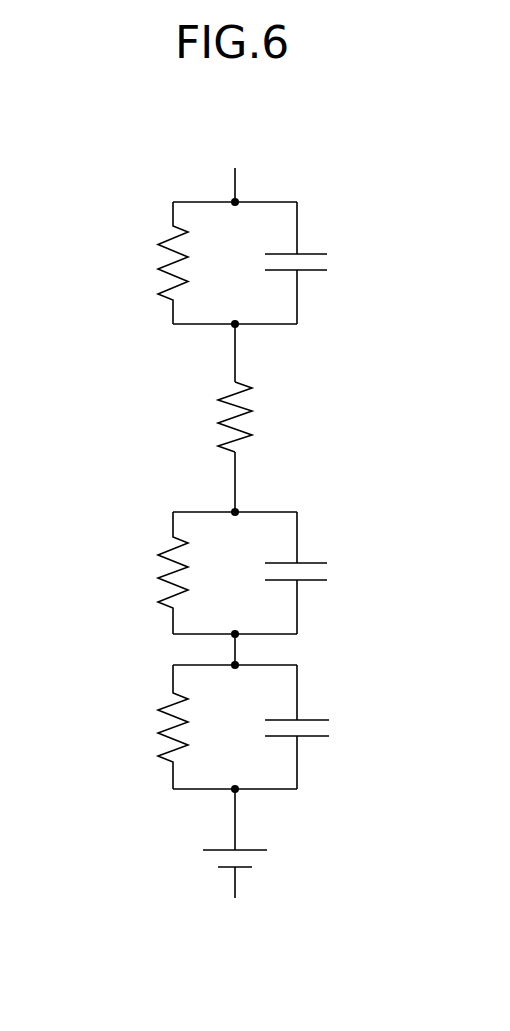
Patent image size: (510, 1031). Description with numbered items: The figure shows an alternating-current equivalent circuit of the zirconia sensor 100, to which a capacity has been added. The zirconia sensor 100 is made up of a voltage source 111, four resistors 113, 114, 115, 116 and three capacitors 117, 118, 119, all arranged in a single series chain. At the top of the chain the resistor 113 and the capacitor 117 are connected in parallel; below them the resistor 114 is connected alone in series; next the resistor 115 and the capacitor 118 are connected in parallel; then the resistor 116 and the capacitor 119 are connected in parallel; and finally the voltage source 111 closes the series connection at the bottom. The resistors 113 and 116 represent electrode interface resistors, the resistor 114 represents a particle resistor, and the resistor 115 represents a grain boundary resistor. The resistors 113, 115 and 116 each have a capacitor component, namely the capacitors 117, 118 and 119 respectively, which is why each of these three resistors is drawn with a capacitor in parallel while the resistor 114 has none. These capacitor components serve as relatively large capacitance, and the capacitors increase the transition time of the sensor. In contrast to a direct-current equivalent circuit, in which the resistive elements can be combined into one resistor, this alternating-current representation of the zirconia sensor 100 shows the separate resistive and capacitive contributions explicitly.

The zirconia sensor 100 is at (348, 150).
The voltage source 111 is at (282, 855).
The resistor 113 is at (146, 258).
The resistor 114 is at (197, 423).
The resistor 115 is at (142, 572).
The resistor 116 is at (142, 727).
The capacitor 117 is at (345, 258).
The capacitor 118 is at (350, 572).
The capacitor 119 is at (350, 727).